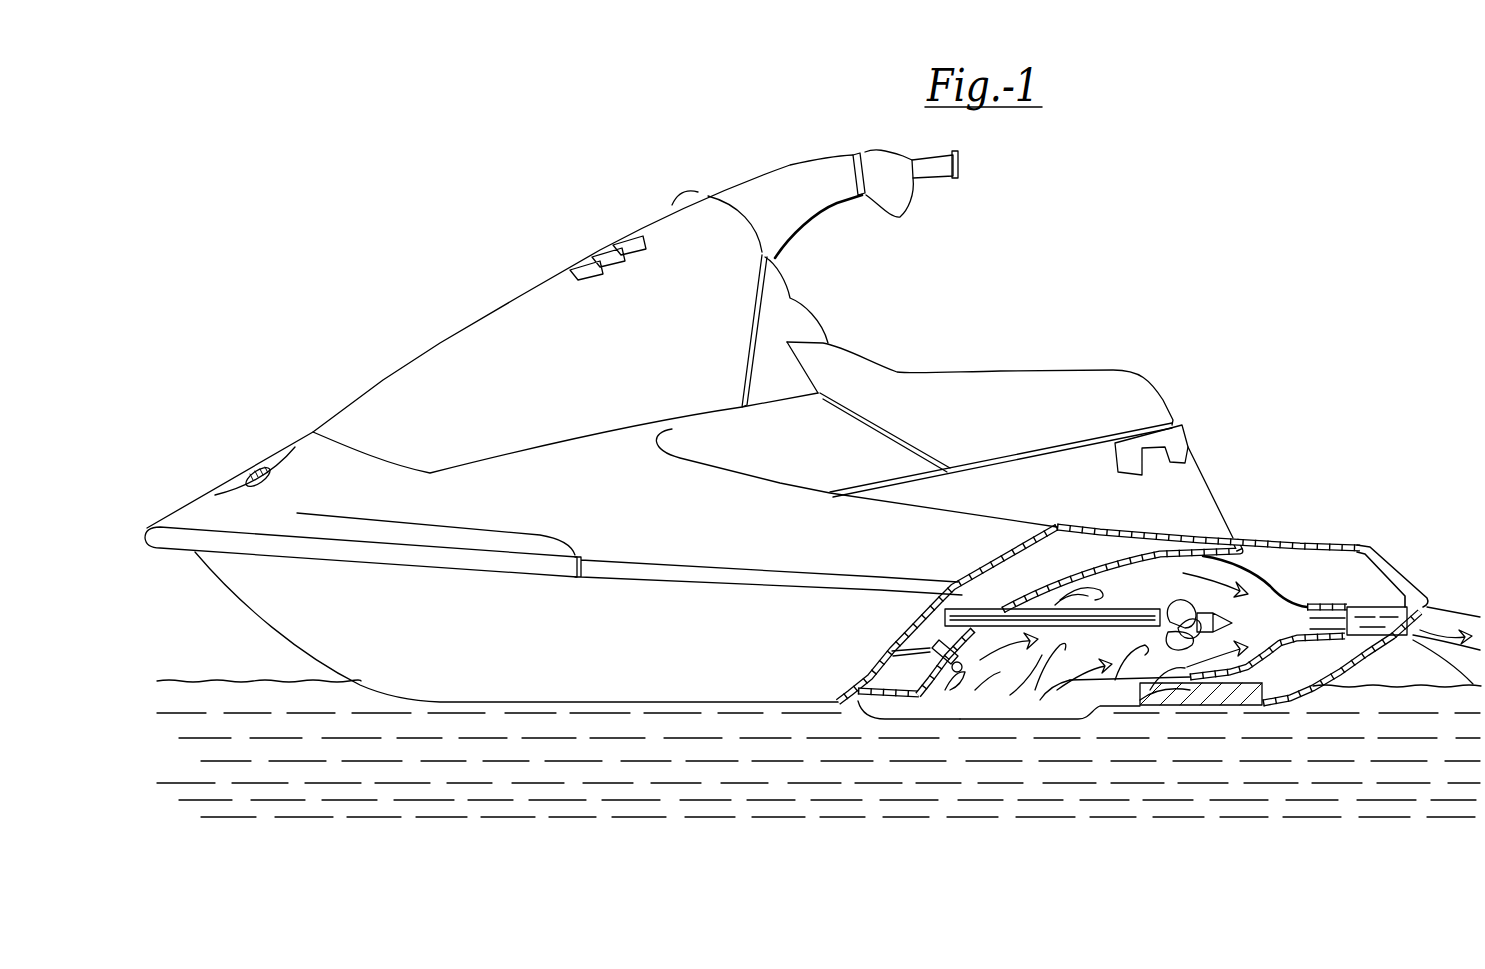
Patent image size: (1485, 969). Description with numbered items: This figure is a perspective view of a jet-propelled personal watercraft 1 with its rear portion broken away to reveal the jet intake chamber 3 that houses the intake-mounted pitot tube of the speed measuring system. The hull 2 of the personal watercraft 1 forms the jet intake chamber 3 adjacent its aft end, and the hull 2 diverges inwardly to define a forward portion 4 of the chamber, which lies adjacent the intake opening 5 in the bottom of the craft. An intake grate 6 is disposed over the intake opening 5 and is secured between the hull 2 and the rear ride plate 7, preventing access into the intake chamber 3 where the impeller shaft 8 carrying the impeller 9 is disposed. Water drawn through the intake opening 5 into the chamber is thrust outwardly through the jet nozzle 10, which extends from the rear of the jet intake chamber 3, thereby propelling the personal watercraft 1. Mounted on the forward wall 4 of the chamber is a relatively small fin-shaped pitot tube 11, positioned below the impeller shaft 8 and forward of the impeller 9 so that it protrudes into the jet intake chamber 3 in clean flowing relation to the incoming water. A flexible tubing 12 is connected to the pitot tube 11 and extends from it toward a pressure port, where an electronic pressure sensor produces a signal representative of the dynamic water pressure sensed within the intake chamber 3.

The personal watercraft 1 is at (1000, 367).
The hull 2 is at (843, 710).
The jet intake chamber 3 is at (1130, 603).
The forward portion 4 is at (927, 682).
The intake opening 5 is at (982, 727).
The intake grate 6 is at (908, 718).
The rear ride plate 7 is at (1175, 705).
The impeller shaft 8 is at (985, 609).
The impeller 9 is at (1170, 590).
The jet nozzle 10 is at (1263, 572).
The pitot tube 11 is at (975, 673).
The flexible tubing 12 is at (930, 645).